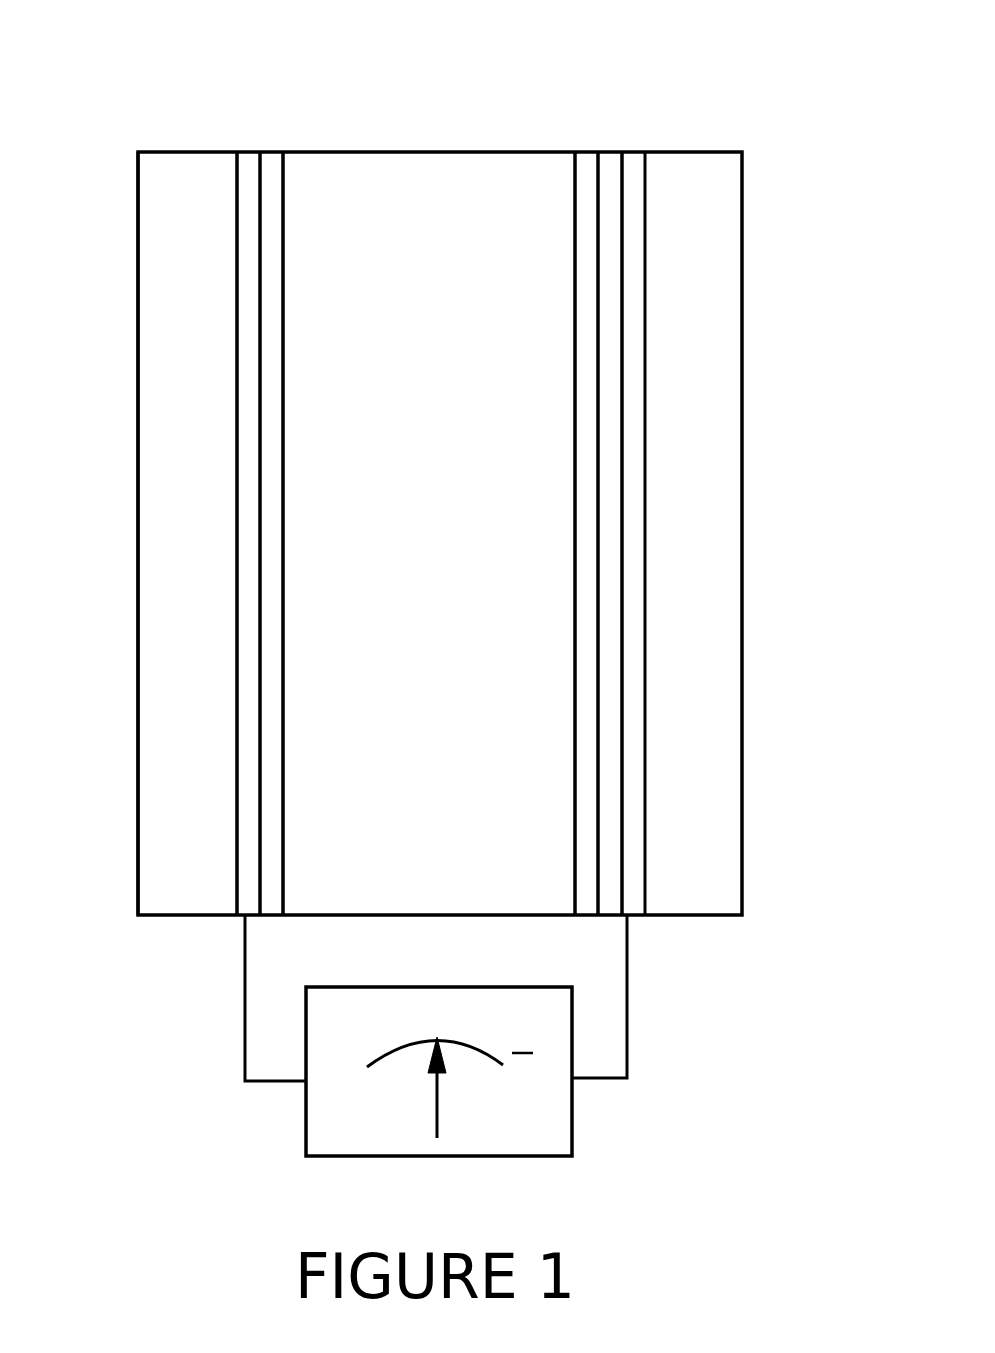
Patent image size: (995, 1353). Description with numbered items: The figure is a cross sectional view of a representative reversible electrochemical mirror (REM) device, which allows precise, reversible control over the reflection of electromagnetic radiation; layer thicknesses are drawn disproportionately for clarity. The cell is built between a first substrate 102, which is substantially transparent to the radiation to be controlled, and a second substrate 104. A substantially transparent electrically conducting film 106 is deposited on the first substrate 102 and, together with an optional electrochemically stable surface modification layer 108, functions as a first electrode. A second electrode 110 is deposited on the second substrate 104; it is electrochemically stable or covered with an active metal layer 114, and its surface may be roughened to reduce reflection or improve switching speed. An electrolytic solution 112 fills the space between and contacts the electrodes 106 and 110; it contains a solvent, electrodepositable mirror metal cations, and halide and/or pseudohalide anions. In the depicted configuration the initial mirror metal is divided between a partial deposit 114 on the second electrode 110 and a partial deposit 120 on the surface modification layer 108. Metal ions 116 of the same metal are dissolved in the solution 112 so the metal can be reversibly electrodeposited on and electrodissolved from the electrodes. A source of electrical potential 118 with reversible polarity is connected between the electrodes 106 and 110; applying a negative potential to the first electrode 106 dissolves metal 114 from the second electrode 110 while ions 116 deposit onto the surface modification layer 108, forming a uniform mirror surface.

The first substrate 102 is at (705, 288).
The second substrate 104 is at (153, 563).
The electrically conducting film 106 is at (637, 160).
The surface modification layer 108 is at (607, 160).
The second electrode 110 is at (250, 160).
The electrolytic solution 112 is at (413, 173).
The active metal layer 114 is at (273, 160).
The metal ions 116 is at (345, 220).
The source of electrical potential 118 is at (548, 1127).
The metallic layer on surface modification layer 120 is at (587, 160).